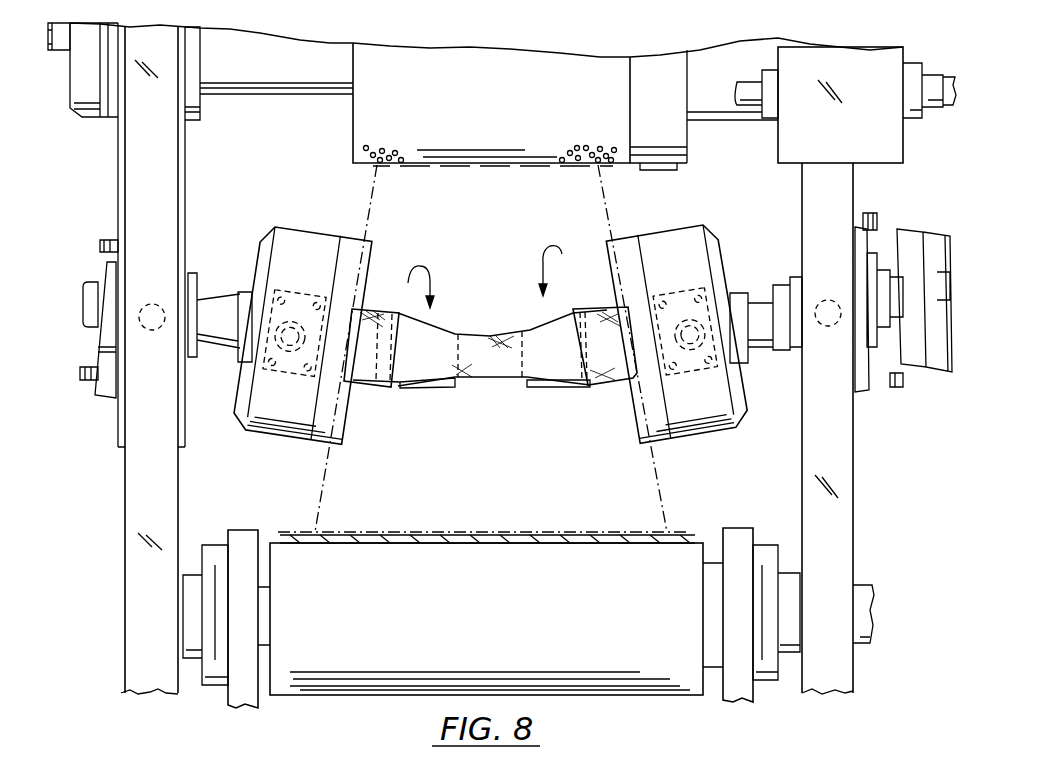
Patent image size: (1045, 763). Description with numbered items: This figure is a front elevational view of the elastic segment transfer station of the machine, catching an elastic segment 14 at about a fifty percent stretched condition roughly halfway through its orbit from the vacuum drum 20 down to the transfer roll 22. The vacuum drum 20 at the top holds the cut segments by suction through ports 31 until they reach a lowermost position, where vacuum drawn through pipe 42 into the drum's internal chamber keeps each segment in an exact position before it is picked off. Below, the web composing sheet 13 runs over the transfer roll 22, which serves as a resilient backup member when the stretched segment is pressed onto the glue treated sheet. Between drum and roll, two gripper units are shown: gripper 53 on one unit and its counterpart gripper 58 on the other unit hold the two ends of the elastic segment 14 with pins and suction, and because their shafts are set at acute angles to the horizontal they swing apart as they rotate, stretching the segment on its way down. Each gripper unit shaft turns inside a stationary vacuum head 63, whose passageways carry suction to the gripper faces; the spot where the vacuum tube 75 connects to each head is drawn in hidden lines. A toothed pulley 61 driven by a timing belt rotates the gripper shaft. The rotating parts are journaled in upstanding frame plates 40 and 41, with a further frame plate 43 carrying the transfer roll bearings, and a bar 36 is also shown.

The sheet 13 is at (688, 531).
The elastic segment 14 is at (487, 334).
The vacuum drum 20 is at (353, 103).
The transfer roll 22 is at (503, 643).
The ports 31 is at (366, 146).
The support bar 36 is at (260, 84).
The frame plate 40 is at (118, 500).
The frame plate 41 is at (853, 505).
The vacuum pipe 42 is at (258, 506).
The frame plate 43 is at (745, 528).
The gripper 53 is at (581, 310).
The gripper 58 is at (378, 307).
The toothed pulley 61 is at (925, 230).
The vacuum head 63 is at (312, 198).
The vacuum tube 75 is at (268, 350).